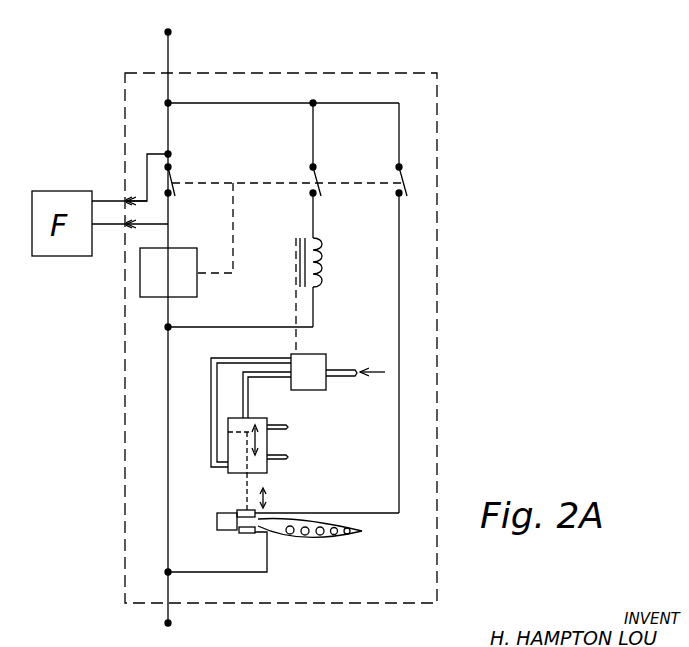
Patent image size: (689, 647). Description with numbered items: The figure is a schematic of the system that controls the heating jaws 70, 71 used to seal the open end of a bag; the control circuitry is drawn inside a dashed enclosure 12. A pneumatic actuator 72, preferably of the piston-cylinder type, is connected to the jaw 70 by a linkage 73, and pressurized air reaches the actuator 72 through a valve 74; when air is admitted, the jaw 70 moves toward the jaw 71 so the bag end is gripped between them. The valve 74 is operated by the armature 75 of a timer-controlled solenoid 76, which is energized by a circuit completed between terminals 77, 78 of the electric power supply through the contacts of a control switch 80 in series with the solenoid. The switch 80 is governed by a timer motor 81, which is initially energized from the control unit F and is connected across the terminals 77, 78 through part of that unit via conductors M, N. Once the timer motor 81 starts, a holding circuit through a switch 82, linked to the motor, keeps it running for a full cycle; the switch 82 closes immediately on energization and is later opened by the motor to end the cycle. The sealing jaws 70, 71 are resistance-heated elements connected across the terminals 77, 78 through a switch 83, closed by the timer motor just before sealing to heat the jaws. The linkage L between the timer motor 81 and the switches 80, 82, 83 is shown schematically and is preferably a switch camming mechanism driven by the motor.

The control unit enclosure 12 is at (122, 127).
The heating jaw 70 is at (241, 509).
The heating jaw 71 is at (243, 535).
The pneumatic actuator 72 is at (228, 448).
The linkage 73 is at (258, 490).
The valve 74 is at (308, 390).
The armature 75 is at (300, 288).
The solenoid 76 is at (310, 240).
The terminal 77 is at (171, 32).
The terminal 78 is at (171, 624).
The control switch 80 is at (318, 177).
The timer motor 81 is at (168, 272).
The switch 82 is at (172, 177).
The switch 83 is at (404, 177).
The linkage L is at (233, 232).
The conductor M is at (118, 195).
The conductor N is at (95, 230).